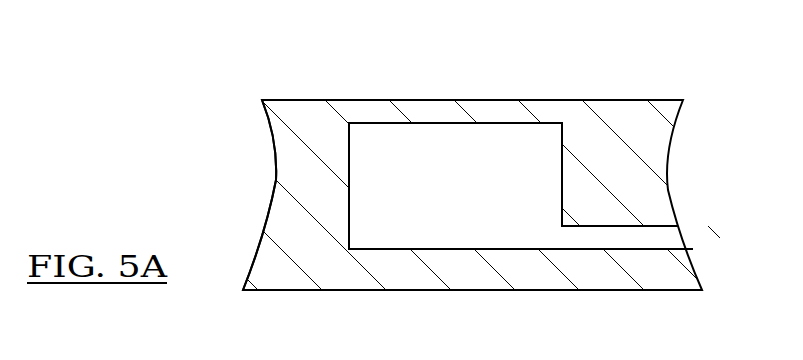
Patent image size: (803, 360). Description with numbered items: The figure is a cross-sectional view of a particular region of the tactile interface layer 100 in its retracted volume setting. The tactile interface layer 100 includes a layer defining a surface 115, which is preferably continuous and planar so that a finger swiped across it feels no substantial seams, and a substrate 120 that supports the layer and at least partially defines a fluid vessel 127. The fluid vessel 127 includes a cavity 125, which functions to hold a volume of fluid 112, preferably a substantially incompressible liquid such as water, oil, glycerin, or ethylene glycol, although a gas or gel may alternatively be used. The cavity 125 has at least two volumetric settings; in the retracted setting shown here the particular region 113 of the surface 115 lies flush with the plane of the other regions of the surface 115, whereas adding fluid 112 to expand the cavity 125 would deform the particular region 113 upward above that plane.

The tactile interface layer 100 is at (655, 72).
The fluid 112 is at (375, 153).
The particular region 113 is at (502, 100).
The surface 115 is at (292, 100).
The substrate 120 is at (648, 179).
The cavity 125 is at (485, 201).
The fluid vessel 127 is at (523, 230).